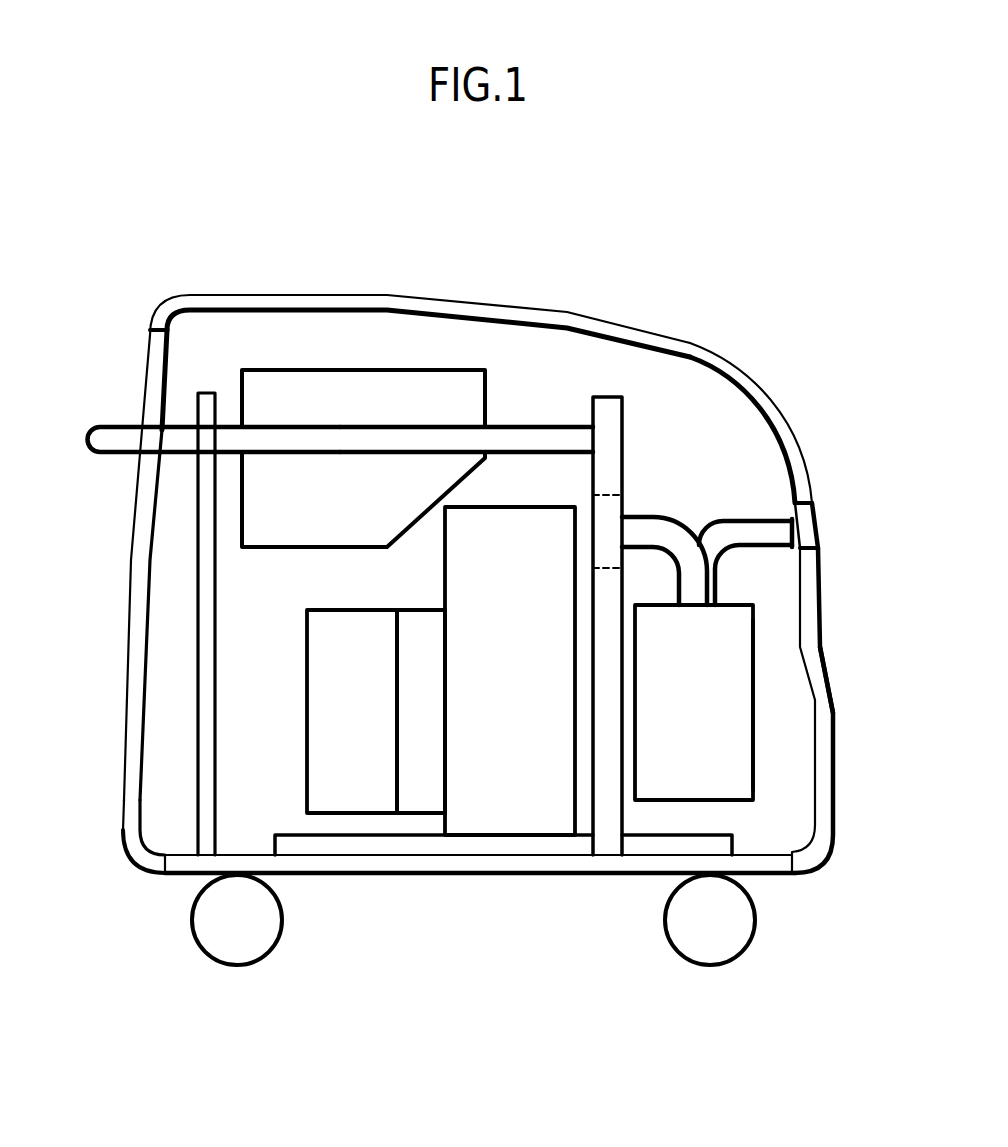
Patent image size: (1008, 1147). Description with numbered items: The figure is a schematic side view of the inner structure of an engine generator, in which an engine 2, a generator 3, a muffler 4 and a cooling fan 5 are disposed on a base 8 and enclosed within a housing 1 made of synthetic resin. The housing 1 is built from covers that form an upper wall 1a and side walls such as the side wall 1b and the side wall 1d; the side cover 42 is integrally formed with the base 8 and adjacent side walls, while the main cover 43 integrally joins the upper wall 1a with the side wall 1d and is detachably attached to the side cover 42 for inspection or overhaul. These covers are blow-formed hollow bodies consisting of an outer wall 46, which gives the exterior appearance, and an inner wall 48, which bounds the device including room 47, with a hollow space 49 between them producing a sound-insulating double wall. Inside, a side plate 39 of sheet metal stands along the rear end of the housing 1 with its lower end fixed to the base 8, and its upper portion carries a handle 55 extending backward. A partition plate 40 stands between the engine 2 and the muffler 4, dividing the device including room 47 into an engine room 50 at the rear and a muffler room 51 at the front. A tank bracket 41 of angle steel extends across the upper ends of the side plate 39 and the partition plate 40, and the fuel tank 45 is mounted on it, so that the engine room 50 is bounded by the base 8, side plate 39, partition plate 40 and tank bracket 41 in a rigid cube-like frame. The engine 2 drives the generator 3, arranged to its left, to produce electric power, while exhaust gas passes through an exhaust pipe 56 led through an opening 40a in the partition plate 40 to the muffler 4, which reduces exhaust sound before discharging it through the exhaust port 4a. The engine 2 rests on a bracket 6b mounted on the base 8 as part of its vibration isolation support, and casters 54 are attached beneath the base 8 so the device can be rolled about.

The housing 1 is at (771, 381).
The upper wall 1a is at (410, 286).
The side wall 1b is at (122, 632).
The side wall 1d is at (828, 597).
The engine 2 is at (500, 818).
The generator 3 is at (347, 800).
The muffler 4 is at (742, 602).
The exhaust port 4a is at (816, 515).
The cooling fan 5 is at (420, 800).
The bracket 6b is at (638, 846).
The base 8 is at (553, 866).
The side plate 39 is at (205, 570).
The partition plate 40 is at (613, 410).
The opening 40a is at (627, 500).
The tank bracket 41 is at (525, 420).
The side cover 42 is at (138, 495).
The main cover 43 is at (594, 314).
The fuel tank 45 is at (258, 392).
The outer wall 46 is at (125, 742).
The device including room 47 is at (328, 330).
The inner wall 48 is at (152, 812).
The hollow space 49 is at (130, 790).
The engine room 50 is at (272, 658).
The muffler room 51 is at (766, 694).
The wheel 54 is at (195, 921).
The handle 55 is at (103, 440).
The exhaust pipe 56 is at (675, 537).